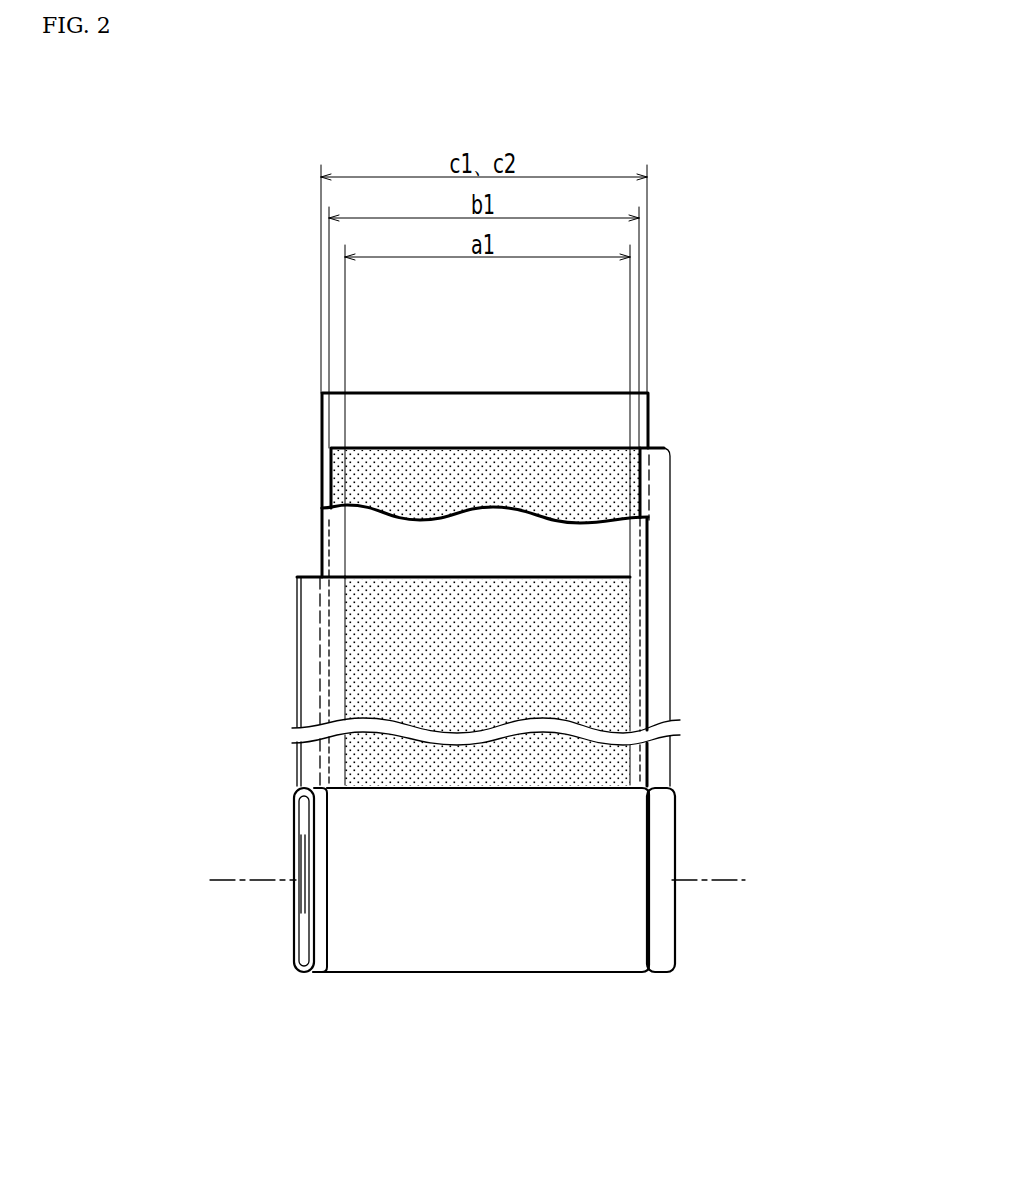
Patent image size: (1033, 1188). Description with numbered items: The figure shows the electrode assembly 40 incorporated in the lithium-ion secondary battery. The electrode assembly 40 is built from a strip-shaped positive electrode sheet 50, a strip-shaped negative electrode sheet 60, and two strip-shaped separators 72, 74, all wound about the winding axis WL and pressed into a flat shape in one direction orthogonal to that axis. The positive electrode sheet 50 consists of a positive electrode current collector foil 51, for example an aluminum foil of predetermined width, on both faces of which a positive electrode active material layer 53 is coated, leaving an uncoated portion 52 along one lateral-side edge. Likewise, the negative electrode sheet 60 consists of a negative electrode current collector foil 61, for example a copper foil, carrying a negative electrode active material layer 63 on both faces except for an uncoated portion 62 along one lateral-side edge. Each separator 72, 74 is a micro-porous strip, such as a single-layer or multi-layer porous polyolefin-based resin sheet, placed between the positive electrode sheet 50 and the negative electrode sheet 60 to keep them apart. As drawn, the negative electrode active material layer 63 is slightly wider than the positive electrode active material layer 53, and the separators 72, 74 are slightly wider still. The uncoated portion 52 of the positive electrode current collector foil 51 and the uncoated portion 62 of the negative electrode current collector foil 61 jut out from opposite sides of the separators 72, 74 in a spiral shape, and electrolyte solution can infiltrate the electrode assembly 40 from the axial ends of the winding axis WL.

The electrode assembly 40 is at (523, 957).
The positive electrode sheet 50 is at (431, 744).
The positive electrode current collector foil 51 is at (473, 575).
The uncoated portion 52 is at (312, 690).
The positive electrode active material layer 53 is at (372, 663).
The negative electrode sheet 60 is at (542, 669).
The negative electrode current collector foil 61 is at (473, 448).
The uncoated portion 62 is at (656, 497).
The negative electrode active material layer 63 is at (585, 459).
The separator 72 is at (337, 418).
The separator 74 is at (337, 551).
The winding axis WL is at (752, 878).